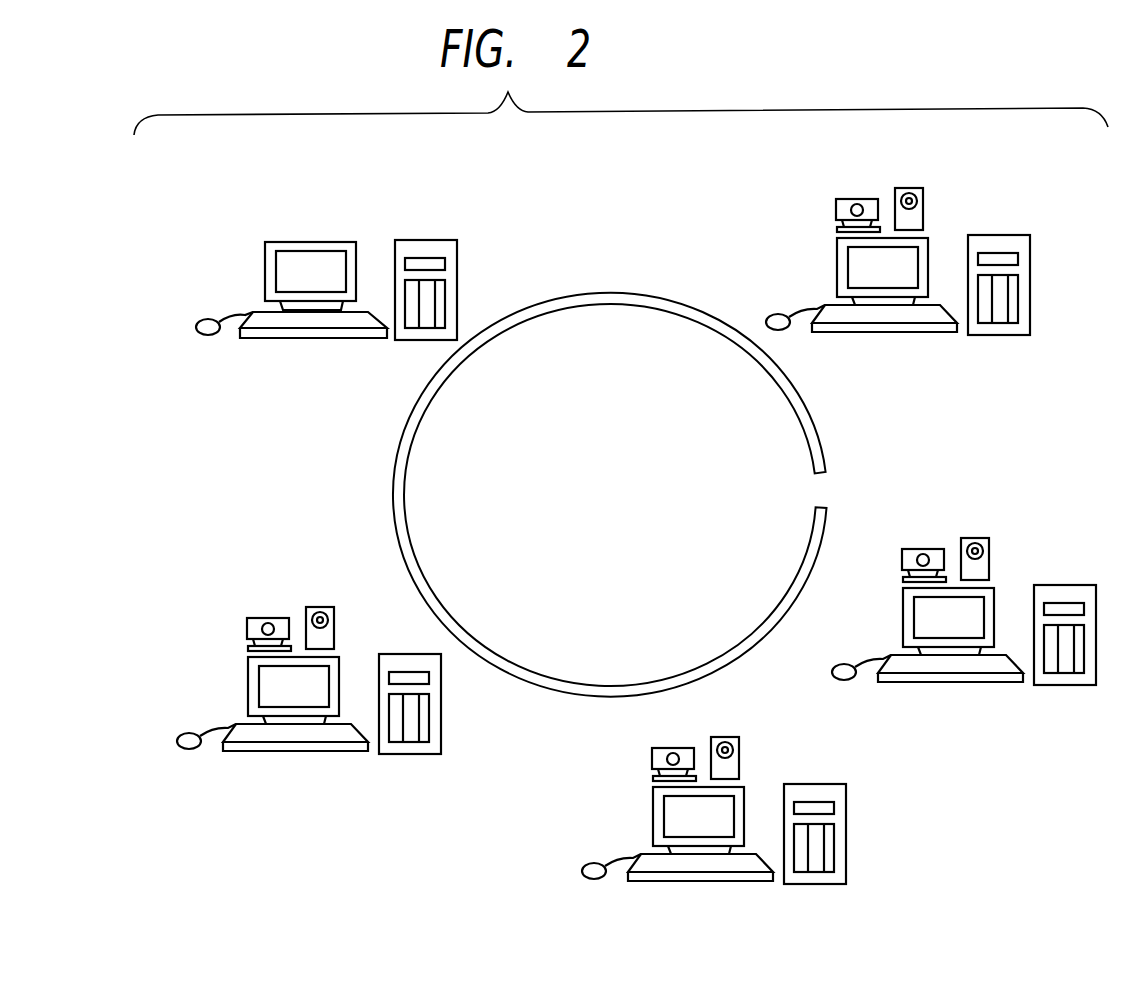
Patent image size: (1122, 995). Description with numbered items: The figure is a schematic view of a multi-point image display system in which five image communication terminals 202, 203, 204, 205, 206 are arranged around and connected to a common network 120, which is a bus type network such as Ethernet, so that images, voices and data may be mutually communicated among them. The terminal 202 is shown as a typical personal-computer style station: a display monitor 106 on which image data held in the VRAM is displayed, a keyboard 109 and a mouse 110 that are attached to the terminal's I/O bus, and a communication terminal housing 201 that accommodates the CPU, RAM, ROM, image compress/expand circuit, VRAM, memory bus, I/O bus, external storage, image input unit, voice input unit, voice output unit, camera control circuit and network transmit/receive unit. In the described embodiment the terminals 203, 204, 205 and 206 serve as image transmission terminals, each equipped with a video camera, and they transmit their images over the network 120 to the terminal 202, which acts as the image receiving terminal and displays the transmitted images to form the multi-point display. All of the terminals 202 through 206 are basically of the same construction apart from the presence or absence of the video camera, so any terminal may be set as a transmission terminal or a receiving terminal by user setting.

The display monitor 106 is at (272, 276).
The keyboard 109 is at (313, 351).
The mouse 110 is at (212, 349).
The network 120 is at (636, 292).
The communication terminal housing 201 is at (462, 281).
The image receiving terminal 202 is at (347, 223).
The image transmission terminal 203 is at (898, 176).
The image transmission terminal 204 is at (293, 603).
The image transmission terminal 205 is at (968, 533).
The image transmission terminal 206 is at (716, 733).